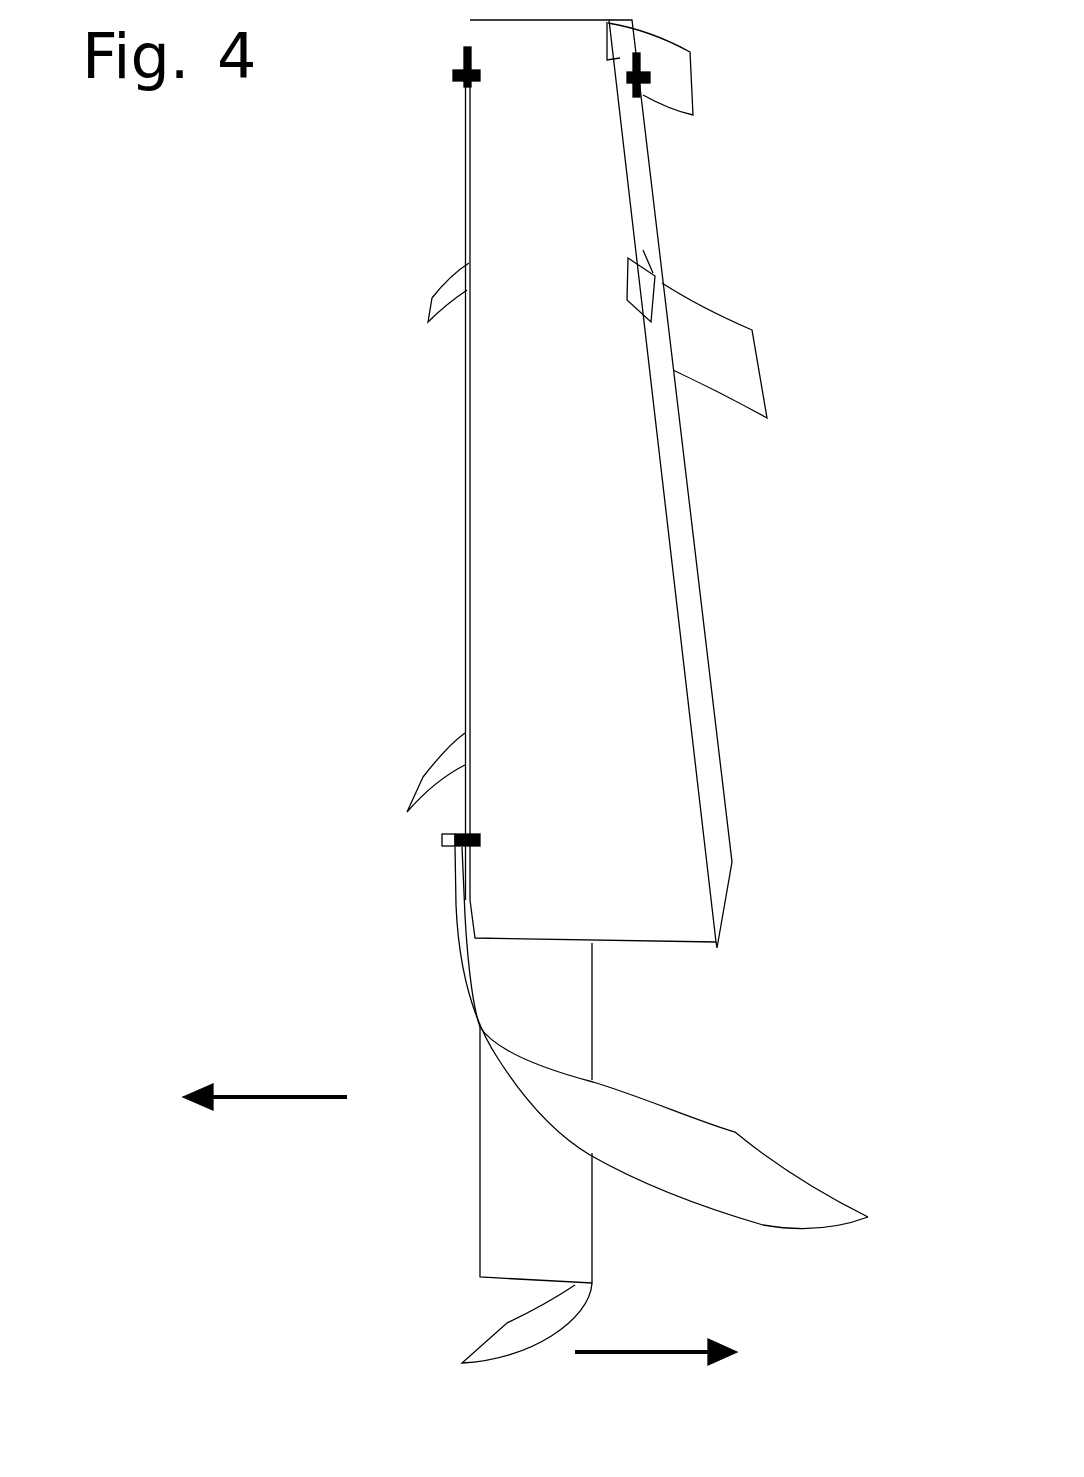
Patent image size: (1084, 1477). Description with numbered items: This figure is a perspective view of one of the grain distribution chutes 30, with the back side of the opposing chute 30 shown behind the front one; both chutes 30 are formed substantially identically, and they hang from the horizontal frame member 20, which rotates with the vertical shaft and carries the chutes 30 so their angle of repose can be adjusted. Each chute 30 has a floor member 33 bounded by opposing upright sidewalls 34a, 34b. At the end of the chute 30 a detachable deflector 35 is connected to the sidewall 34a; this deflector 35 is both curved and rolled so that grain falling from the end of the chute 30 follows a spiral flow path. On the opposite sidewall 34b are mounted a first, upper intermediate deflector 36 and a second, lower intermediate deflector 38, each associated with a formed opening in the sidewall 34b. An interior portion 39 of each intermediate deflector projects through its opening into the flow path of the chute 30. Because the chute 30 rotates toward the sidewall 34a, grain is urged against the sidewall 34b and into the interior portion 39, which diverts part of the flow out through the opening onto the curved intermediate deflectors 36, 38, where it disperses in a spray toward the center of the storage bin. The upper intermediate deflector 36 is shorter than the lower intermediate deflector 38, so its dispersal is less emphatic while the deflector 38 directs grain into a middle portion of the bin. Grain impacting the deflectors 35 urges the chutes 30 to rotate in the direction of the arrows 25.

The horizontal frame member 20 is at (460, 82).
The arrows 25 is at (268, 1093).
The chute 30 is at (542, 651).
The floor member 33 is at (630, 568).
The sidewall 34a is at (473, 433).
The sidewall 34b is at (712, 723).
The deflector 35 is at (752, 1142).
The first intermediate deflector 36 is at (683, 62).
The second intermediate deflector 38 is at (748, 362).
The interior portion 39 is at (607, 60).